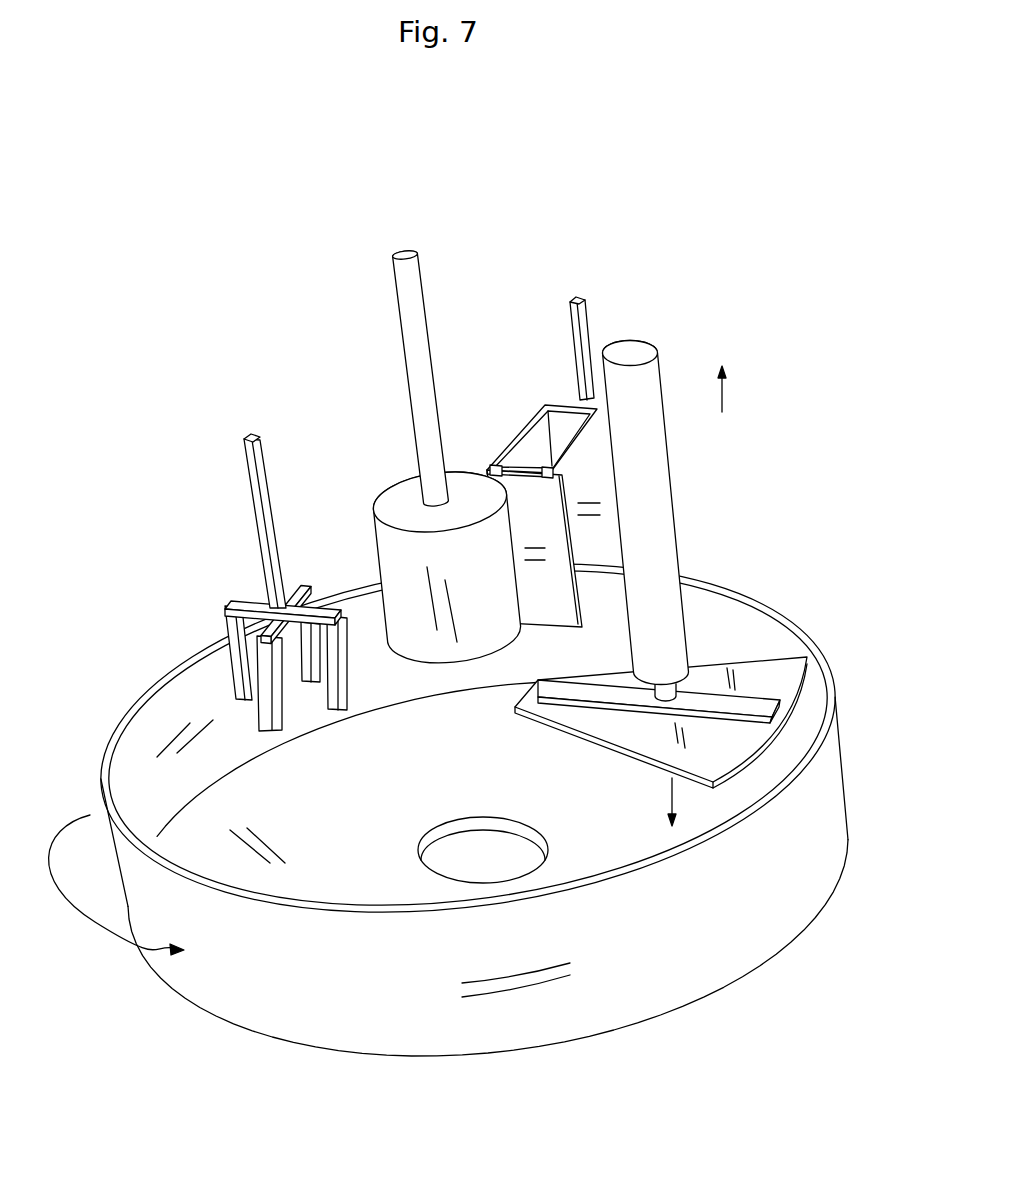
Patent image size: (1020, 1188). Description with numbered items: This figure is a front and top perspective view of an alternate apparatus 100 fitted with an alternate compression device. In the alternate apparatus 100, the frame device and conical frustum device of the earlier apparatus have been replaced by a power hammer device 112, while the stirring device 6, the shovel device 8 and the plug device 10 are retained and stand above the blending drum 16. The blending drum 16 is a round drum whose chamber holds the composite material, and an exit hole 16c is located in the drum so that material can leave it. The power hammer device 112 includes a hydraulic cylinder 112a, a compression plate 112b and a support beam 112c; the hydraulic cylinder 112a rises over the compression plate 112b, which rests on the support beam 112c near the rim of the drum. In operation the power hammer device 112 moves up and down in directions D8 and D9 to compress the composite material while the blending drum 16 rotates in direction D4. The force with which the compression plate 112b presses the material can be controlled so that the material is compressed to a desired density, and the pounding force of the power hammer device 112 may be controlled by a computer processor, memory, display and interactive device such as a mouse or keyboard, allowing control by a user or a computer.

The alternate apparatus 100 is at (474, 652).
The stirring device 6 is at (228, 603).
The shovel device 8 is at (582, 345).
The plug device 10 is at (428, 413).
The blending drum 16 is at (485, 779).
The exit hole 16c is at (462, 845).
The power hammer device 112 is at (673, 550).
The hydraulic cylinder 112a is at (677, 672).
The compression plate 112b is at (707, 671).
The support beam 112c is at (775, 700).
The rotation direction of blending drum D4 is at (116, 885).
The upward direction of power hammer device D8 is at (703, 389).
The downward direction of power hammer device D9 is at (648, 802).